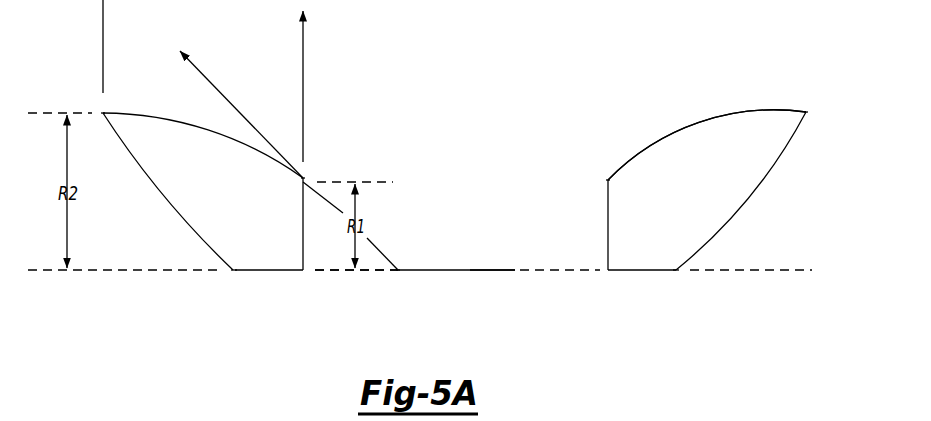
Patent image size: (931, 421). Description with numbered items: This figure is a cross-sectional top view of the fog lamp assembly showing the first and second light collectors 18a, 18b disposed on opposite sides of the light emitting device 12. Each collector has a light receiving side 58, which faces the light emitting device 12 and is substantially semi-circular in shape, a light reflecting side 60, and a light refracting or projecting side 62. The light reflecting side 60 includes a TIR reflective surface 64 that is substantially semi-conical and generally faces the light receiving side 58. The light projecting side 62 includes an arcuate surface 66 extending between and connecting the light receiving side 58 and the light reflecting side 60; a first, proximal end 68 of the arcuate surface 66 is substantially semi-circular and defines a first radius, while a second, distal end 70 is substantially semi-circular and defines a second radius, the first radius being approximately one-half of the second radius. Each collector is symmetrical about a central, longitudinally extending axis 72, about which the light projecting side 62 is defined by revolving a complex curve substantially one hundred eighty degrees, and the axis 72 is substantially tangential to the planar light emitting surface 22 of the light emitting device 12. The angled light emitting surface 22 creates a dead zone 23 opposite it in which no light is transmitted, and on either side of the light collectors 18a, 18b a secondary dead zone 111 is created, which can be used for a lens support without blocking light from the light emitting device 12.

The light emitting device 12 is at (396, 277).
The first light collector 18a is at (205, 110).
The second light collector 18b is at (709, 100).
The light emitting surface 22 is at (455, 270).
The dead zone 23 is at (476, 282).
The light receiving side 58 is at (310, 222).
The light reflecting side 60 is at (152, 188).
The light projecting side 62 is at (157, 109).
The TIR reflective surface 64 is at (208, 250).
The arcuate surface 66 is at (240, 147).
The first longitudinal end 68 is at (303, 178).
The second longitudinal end 70 is at (103, 112).
The axis 72 is at (317, 273).
The secondary dead zone 111 is at (149, 245).